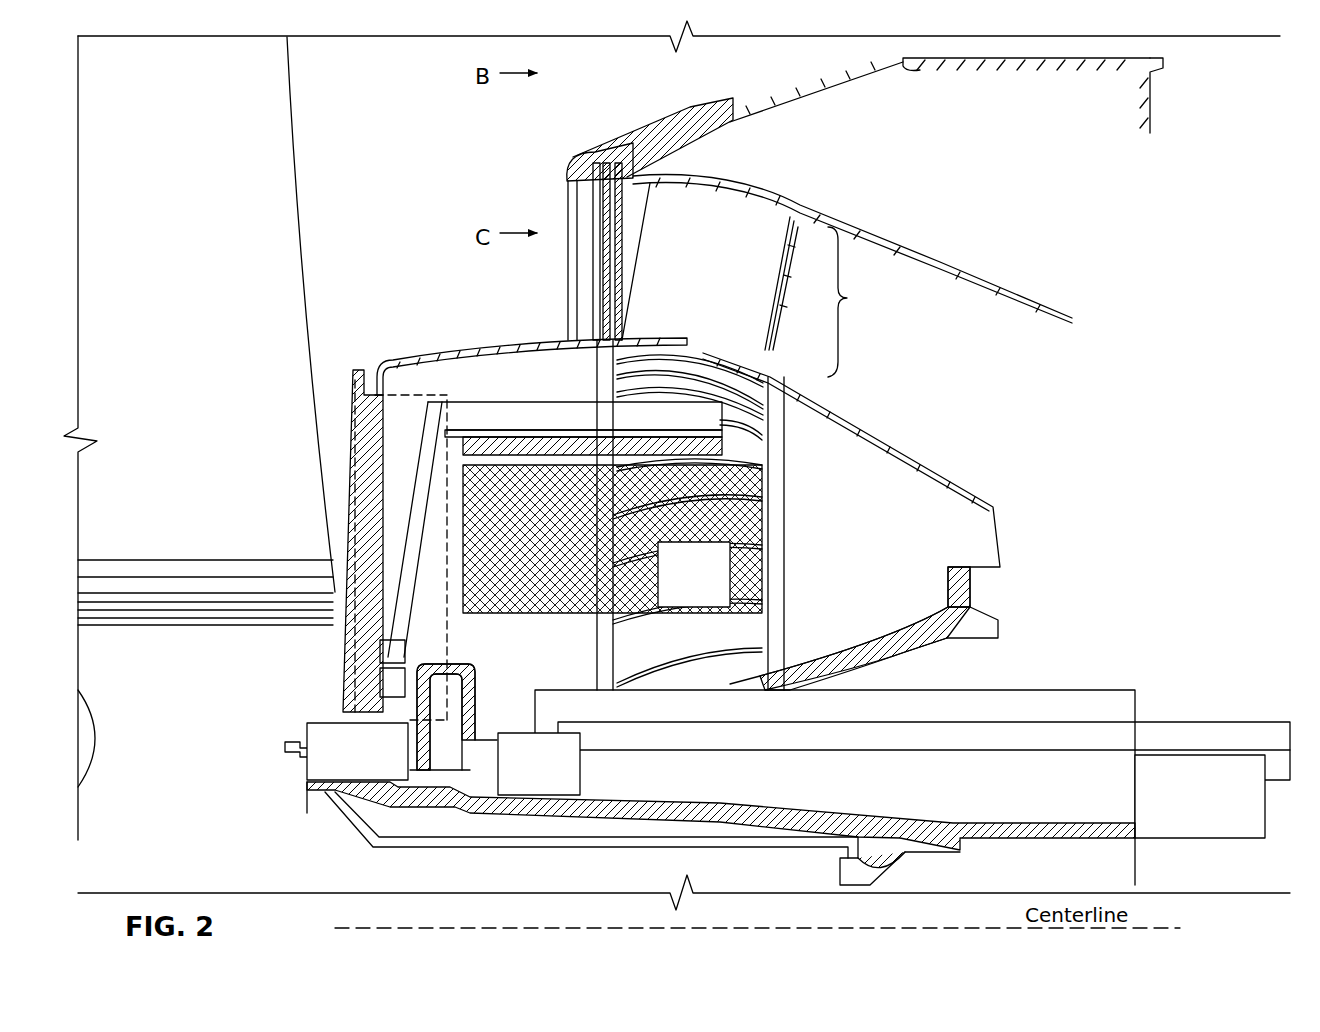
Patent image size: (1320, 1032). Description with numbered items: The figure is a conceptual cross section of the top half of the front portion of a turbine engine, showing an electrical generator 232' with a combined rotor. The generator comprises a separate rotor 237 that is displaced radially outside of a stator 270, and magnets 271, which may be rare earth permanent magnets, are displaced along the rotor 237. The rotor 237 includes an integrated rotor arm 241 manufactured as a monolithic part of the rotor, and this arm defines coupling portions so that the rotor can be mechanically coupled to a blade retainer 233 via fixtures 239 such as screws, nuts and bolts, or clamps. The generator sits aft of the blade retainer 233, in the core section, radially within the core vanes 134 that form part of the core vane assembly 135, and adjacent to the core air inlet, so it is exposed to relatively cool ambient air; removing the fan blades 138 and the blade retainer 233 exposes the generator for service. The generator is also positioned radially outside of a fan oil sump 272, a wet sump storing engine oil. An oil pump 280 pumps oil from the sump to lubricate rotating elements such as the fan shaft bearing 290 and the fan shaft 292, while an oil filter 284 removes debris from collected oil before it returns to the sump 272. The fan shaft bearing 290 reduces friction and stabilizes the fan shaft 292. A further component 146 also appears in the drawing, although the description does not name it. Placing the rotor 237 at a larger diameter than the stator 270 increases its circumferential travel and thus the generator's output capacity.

The fan blades 138 is at (292, 168).
The hub 146 is at (593, 163).
The core vanes 134 is at (663, 267).
The core vane assembly 135 is at (827, 297).
The electrical generator 232' is at (424, 483).
The separate rotor 237 is at (530, 400).
The rotor arm 241 is at (437, 397).
The magnets 271 is at (463, 437).
The blade retainer 233 is at (353, 492).
The fixtures 239 is at (142, 572).
The stator 270 is at (623, 522).
The fan oil sump 272 is at (1135, 690).
The fan shaft bearing 290 is at (391, 722).
The oil filter 284 is at (539, 764).
The oil pump 280 is at (1200, 796).
The fan shaft 292 is at (563, 853).